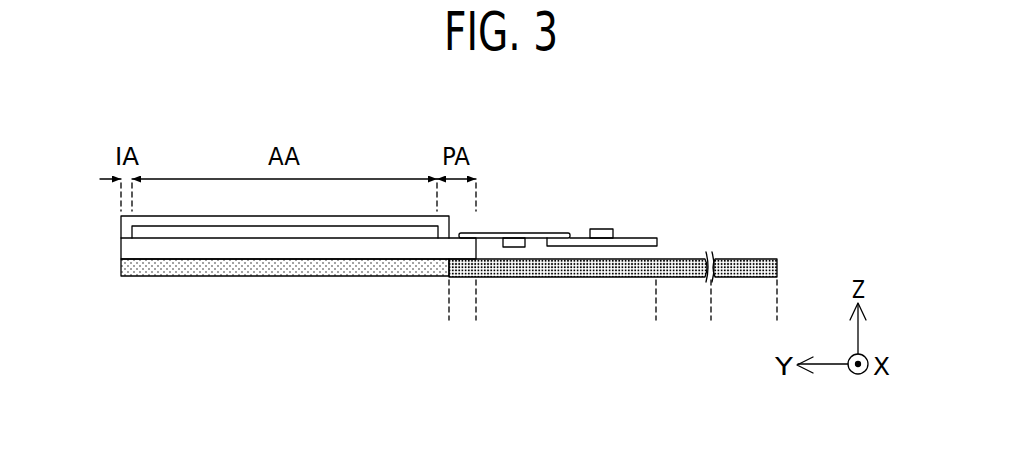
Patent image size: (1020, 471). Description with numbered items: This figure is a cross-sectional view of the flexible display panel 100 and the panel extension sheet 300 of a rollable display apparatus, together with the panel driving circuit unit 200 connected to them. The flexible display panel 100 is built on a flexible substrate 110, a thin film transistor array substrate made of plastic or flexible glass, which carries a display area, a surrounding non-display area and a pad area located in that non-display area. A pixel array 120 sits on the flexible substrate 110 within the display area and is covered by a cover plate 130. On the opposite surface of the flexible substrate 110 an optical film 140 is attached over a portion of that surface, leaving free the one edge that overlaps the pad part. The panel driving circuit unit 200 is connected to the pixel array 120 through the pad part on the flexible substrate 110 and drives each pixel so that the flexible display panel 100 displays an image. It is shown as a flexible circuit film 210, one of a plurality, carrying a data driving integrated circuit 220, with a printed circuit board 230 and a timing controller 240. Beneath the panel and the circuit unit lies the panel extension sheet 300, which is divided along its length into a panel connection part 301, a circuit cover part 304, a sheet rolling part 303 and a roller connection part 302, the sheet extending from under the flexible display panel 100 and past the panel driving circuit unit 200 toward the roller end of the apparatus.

The flexible display panel 100 is at (298, 295).
The flexible substrate 110 is at (235, 247).
The pixel array 120 is at (295, 233).
The cover plate 130 is at (354, 218).
The optical film 140 is at (352, 336).
The panel driving circuit unit 200 is at (565, 190).
The flexible circuit film 210 is at (553, 237).
The data driving integrated circuit 220 is at (512, 242).
The printed circuit board 230 is at (650, 238).
The timing controller 240 is at (602, 229).
The panel extension sheet 300 is at (744, 264).
The panel connection part 301 is at (476, 313).
The roller connection part 302 is at (777, 313).
The sheet rolling part 303 is at (711, 313).
The circuit cover part 304 is at (656, 313).